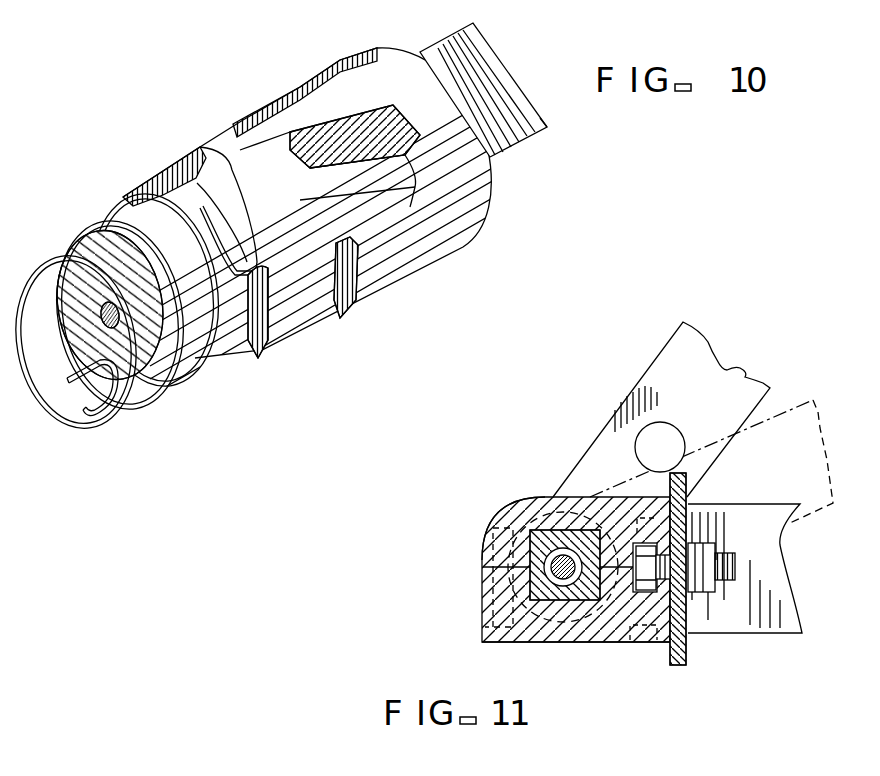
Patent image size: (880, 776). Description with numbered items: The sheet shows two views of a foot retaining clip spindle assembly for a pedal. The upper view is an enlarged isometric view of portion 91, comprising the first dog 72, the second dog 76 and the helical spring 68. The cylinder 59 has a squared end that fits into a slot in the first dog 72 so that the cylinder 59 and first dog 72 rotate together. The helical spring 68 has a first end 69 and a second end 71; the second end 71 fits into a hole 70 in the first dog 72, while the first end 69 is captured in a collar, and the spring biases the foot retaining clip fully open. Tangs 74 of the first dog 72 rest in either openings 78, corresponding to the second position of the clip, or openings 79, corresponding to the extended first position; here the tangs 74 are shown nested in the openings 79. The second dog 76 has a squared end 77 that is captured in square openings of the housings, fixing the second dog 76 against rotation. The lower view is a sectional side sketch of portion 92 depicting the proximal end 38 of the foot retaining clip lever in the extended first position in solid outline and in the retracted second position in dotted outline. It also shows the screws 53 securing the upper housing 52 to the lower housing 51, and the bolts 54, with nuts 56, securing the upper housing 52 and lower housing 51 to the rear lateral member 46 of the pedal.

In FIG. 11, the proximal end 38 is at (563, 442).
In FIG. 11, the rear lateral member 46 is at (688, 665).
In FIG. 11, the lower housing 51 is at (482, 607).
In FIG. 11, the upper housing 52 is at (500, 522).
In FIG. 11, the screws 53 is at (493, 642).
In FIG. 11, the screws 54 is at (622, 622).
In FIG. 11, the nuts 56 is at (705, 592).
In FIG. 10, the cylinder 59 is at (154, 318).
In FIG. 10, the helical spring 68 is at (170, 393).
In FIG. 10, the first end 69 is at (63, 413).
In FIG. 10, the hole 70 is at (255, 247).
In FIG. 10, the second end 71 is at (270, 265).
In FIG. 10, the first dog 72 is at (297, 338).
In FIG. 10, the tangs 74 is at (388, 230).
In FIG. 10, the second dog 76 is at (390, 278).
In FIG. 10, the squared end 77 is at (545, 113).
In FIG. 11, the squared end 77 is at (563, 600).
In FIG. 10, the openings 78 is at (397, 135).
In FIG. 10, the openings 79 is at (390, 228).
In FIG. 10, the portion 91 is at (549, 49).
In FIG. 11, the portion 92 is at (625, 740).